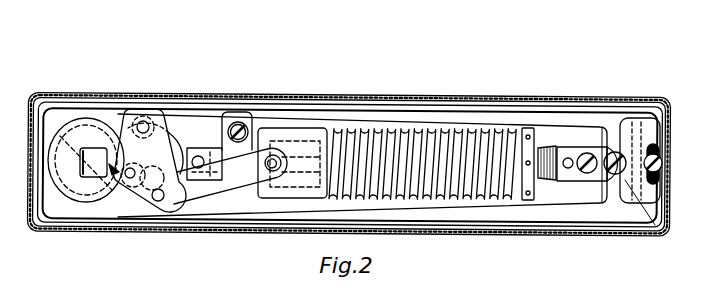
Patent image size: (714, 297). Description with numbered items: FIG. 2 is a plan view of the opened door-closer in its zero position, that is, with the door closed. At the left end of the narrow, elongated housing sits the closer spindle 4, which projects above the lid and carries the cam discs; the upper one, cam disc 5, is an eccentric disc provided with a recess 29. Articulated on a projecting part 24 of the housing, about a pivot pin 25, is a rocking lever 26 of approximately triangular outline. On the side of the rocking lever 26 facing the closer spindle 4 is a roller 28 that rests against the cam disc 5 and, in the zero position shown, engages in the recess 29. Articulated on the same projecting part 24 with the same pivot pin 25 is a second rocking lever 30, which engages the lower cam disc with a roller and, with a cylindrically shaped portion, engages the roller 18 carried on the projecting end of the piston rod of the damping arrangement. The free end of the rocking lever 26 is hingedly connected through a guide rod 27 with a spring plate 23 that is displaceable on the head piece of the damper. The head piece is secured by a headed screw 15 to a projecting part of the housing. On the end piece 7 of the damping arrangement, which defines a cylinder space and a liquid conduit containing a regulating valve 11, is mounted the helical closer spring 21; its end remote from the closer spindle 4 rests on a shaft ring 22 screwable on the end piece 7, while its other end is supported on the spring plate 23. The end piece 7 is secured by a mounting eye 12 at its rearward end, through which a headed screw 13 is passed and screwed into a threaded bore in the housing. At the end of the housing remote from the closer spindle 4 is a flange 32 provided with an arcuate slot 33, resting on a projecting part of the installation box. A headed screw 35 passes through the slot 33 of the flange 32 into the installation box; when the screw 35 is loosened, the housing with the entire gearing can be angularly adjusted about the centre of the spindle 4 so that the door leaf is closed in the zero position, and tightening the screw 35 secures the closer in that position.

The closer spindle 4 is at (90, 158).
The cam disc 5 is at (66, 183).
The end piece 7 is at (551, 146).
The regulating valve 11 is at (588, 156).
The mounting eye 12 is at (625, 178).
The headed screw 13 is at (613, 155).
The headed screw 15 is at (240, 123).
The roller 18 is at (189, 146).
The helical closer spring 21 is at (346, 130).
The shaft ring 22 is at (534, 137).
The spring plate 23 is at (284, 136).
The projecting part 24 is at (136, 108).
The pivot pin 25 is at (143, 121).
The rocking lever 26 is at (163, 128).
The guide rod 27 is at (218, 188).
The roller 28 is at (127, 182).
The recess 29 is at (113, 171).
The second rocking lever 30 is at (176, 148).
The flange 32 is at (657, 198).
The arcuate slot 33 is at (653, 144).
The headed screw 35 is at (661, 162).